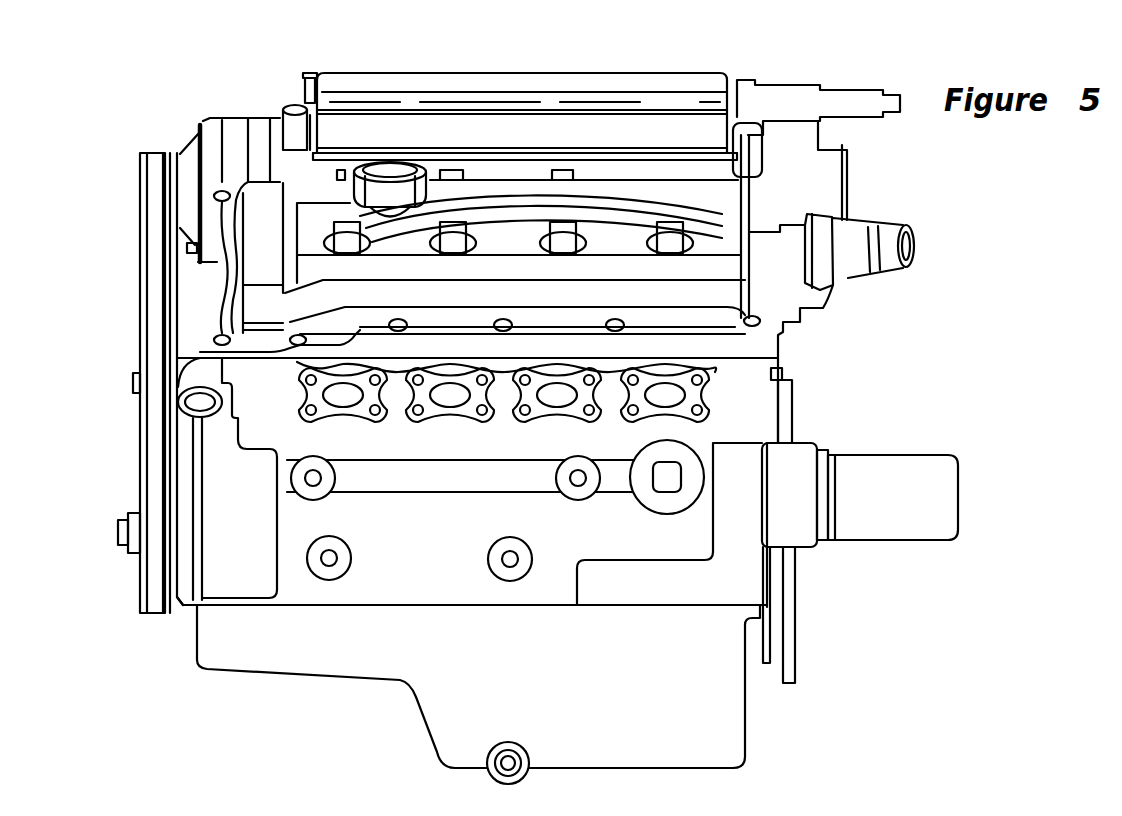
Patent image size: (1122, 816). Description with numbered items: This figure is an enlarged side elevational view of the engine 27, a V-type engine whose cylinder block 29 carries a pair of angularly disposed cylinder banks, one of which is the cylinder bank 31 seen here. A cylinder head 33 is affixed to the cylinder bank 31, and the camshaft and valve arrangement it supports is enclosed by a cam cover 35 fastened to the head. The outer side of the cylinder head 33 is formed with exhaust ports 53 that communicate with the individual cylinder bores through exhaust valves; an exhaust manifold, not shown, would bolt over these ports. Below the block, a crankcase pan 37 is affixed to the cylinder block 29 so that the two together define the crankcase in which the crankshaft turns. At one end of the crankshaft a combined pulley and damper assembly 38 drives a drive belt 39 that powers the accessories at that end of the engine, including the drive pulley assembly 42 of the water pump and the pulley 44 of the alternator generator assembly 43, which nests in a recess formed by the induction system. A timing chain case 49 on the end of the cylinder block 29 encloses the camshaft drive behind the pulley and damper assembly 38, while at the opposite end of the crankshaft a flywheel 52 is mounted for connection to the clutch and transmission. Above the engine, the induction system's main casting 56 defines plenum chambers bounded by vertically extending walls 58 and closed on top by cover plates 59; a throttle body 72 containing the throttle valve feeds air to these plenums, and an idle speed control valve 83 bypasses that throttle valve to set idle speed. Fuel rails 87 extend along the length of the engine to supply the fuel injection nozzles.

The engine 27 is at (895, 360).
The cylinder block 29 is at (765, 407).
The cylinder bank 31 is at (290, 480).
The cylinder head 33 is at (772, 370).
The cam cover 35 is at (762, 327).
The crankcase pan 37 is at (303, 653).
The combined pulley and damper assembly 38 is at (133, 582).
The drive belt 39 is at (157, 230).
The drive pulley assembly 42 is at (135, 337).
The alternator generator assembly 43 is at (233, 130).
The pulley 44 is at (140, 190).
The timing chain case 49 is at (193, 293).
The flywheel 52 is at (800, 623).
The exhaust ports 53 is at (447, 400).
The main casting 56 is at (655, 123).
The vertically extending wall 58 is at (472, 128).
The cover plate 59 is at (572, 78).
The throttle body 72 is at (835, 177).
The idle speed control valve 83 is at (787, 98).
The fuel rail 87 is at (320, 158).